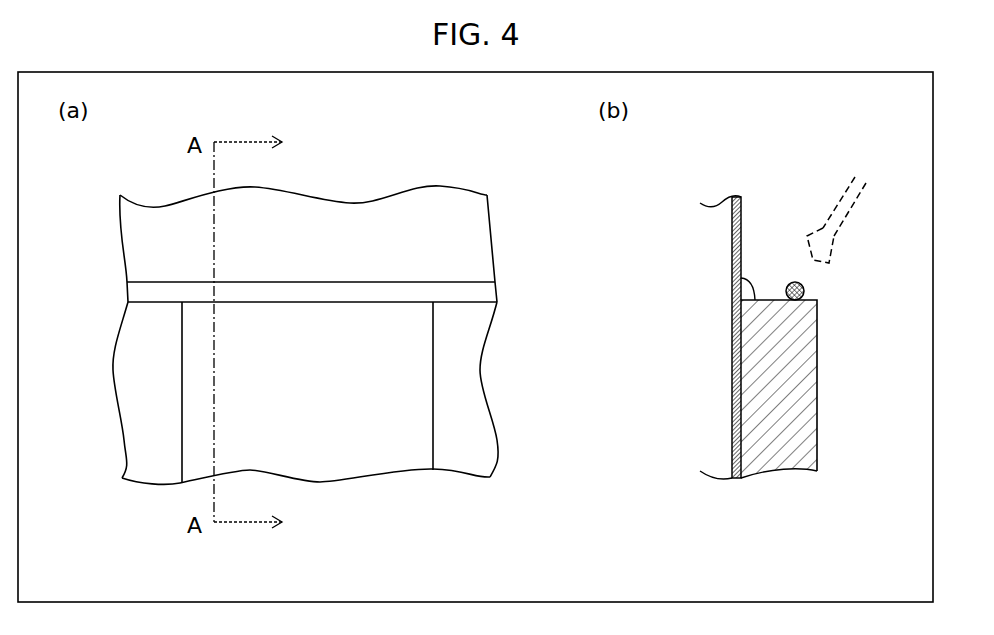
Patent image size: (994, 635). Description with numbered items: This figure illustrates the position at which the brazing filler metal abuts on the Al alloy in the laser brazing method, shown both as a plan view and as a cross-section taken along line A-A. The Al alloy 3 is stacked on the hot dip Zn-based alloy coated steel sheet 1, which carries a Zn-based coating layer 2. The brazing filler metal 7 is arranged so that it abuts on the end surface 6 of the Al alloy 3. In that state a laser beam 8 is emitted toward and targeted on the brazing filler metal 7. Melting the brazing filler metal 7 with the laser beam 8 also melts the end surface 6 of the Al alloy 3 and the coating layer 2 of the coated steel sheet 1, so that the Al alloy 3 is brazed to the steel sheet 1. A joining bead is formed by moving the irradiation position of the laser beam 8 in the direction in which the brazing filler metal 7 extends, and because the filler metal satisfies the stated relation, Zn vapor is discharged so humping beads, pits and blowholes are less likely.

The hot dip Zn-based alloy coated steel sheet 1 is at (742, 487).
The Zn-based coating layer 2 is at (133, 242).
The Al alloy 3 is at (358, 468).
The end surface of Al alloy 6 is at (745, 278).
The brazing filler metal 7 is at (398, 290).
The laser beam 8 is at (851, 219).